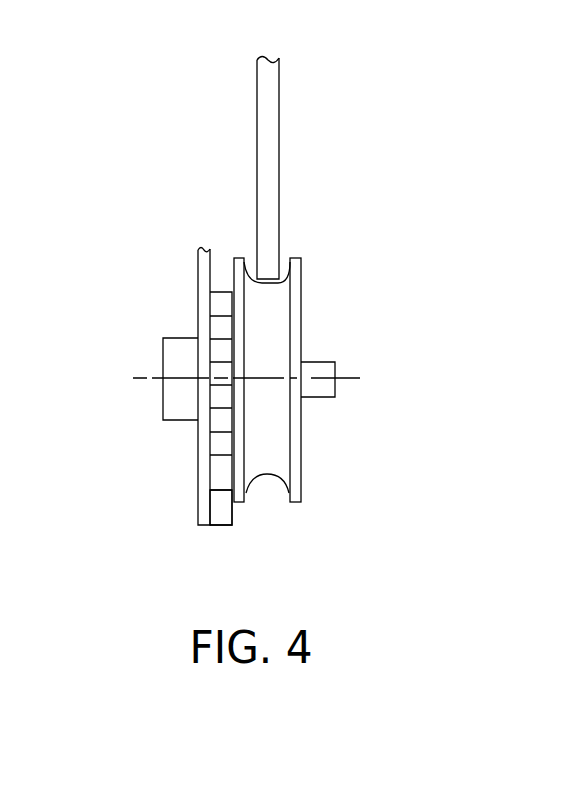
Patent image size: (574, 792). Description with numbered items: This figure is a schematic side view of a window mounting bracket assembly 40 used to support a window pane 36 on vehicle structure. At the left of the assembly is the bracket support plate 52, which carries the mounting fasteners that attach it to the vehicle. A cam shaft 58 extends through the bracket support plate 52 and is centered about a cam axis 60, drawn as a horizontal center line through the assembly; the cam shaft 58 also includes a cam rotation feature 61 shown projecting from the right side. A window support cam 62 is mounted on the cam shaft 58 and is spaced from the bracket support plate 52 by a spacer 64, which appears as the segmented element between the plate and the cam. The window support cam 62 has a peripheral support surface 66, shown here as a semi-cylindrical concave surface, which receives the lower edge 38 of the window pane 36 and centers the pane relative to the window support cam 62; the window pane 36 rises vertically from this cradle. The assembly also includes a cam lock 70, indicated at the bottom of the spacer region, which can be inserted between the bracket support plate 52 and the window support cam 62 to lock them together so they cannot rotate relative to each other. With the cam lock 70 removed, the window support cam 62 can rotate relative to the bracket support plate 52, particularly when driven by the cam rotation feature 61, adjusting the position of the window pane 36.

The window pane 36 is at (279, 95).
The lower edge 38 is at (268, 283).
The window mounting bracket assembly 40 is at (152, 264).
The bracket support plate 52 is at (198, 467).
The cam shaft 58 is at (180, 338).
The cam axis 60 is at (147, 384).
The cam rotation feature 61 is at (322, 362).
The window support cam 62 is at (301, 443).
The spacer 64 is at (223, 292).
The peripheral support surface 66 is at (270, 477).
The cam lock 70 is at (218, 525).